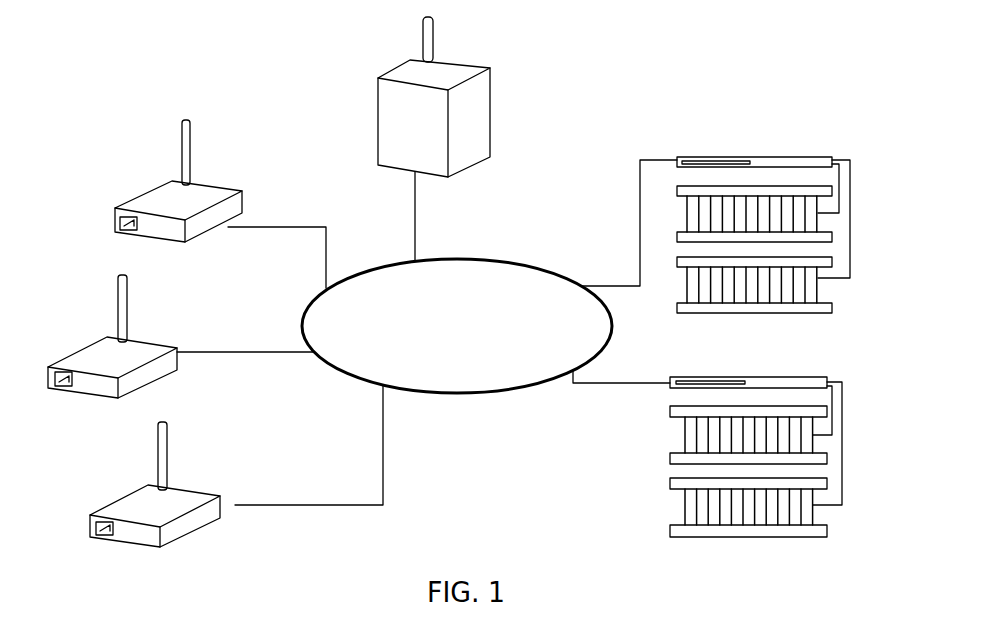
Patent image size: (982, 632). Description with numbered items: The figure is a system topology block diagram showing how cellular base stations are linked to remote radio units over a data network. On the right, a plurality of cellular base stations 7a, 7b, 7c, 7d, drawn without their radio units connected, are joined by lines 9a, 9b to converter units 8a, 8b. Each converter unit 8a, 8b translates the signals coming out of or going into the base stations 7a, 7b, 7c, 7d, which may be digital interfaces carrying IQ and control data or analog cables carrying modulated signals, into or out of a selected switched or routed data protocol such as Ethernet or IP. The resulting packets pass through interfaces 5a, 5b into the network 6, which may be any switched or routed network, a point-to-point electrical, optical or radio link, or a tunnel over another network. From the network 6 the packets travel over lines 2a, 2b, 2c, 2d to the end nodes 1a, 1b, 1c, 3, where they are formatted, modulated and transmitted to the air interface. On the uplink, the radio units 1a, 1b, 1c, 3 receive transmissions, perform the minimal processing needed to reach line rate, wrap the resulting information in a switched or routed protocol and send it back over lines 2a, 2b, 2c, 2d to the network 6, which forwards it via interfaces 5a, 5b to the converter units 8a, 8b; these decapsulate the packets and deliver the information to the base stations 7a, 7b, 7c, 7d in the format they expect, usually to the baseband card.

The radio unit 1a is at (139, 190).
The radio unit 1b is at (79, 344).
The radio unit 1c is at (105, 502).
The line 2a is at (285, 227).
The line 2b is at (248, 353).
The line 2c is at (347, 505).
The line 2d is at (415, 222).
The end node 3 is at (453, 60).
The interface 5a is at (640, 177).
The interface 5b is at (602, 385).
The network 6 is at (510, 260).
The cellular base station 7a is at (688, 210).
The cellular base station 7b is at (685, 283).
The cellular base station 7c is at (680, 428).
The cellular base station 7d is at (682, 503).
The converter unit 8a is at (765, 155).
The converter unit 8b is at (772, 376).
The line 9a is at (840, 282).
The line 9b is at (831, 510).